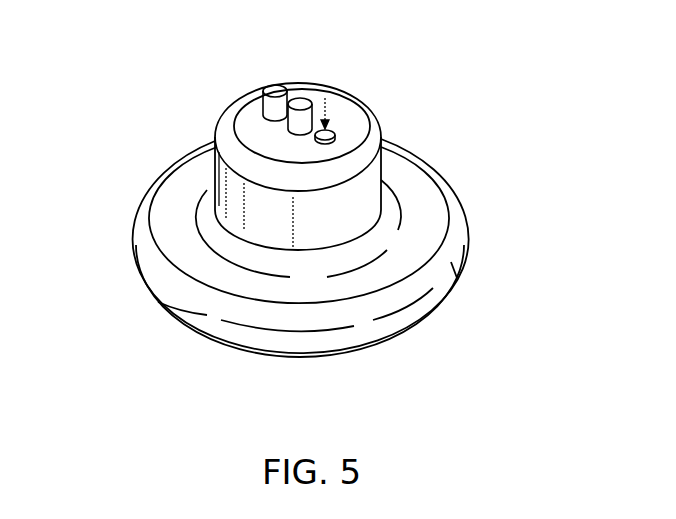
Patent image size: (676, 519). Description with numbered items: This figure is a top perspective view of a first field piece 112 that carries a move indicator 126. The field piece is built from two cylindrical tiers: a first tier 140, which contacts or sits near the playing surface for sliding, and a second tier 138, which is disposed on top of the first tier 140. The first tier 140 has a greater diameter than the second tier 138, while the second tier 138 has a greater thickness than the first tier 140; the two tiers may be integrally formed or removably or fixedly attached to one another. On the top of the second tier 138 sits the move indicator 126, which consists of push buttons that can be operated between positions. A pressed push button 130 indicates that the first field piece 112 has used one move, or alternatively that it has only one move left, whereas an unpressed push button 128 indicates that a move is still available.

The first field piece 112 is at (433, 203).
The move indicator 126 is at (321, 79).
The unpressed push button 128 is at (264, 108).
The pressed push button 130 is at (337, 134).
The second tier 138 is at (227, 145).
The first tier 140 is at (150, 248).